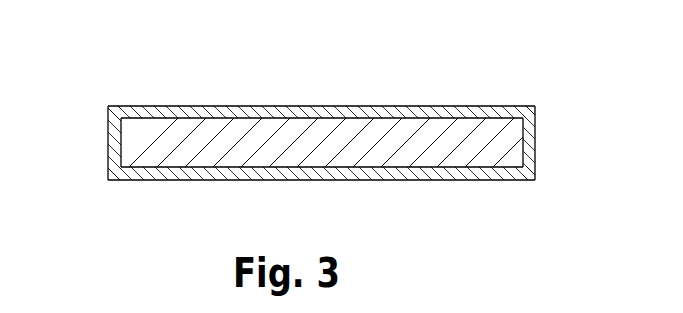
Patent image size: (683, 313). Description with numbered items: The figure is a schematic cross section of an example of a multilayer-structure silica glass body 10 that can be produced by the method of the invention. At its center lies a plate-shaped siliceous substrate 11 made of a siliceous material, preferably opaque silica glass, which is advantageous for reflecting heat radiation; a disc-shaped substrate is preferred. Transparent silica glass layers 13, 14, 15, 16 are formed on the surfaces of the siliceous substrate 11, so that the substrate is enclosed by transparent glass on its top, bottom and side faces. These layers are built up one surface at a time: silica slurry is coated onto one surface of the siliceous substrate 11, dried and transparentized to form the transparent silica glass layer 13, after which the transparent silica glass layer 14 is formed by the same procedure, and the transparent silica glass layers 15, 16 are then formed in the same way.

The multilayer-structure silica glass body 10 is at (104, 67).
The siliceous substrate 11 is at (207, 133).
The transparent silica glass layer 13 is at (373, 101).
The transparent silica glass layer 14 is at (376, 186).
The transparent silica glass layer 15 is at (102, 147).
The transparent silica glass layer 16 is at (543, 148).